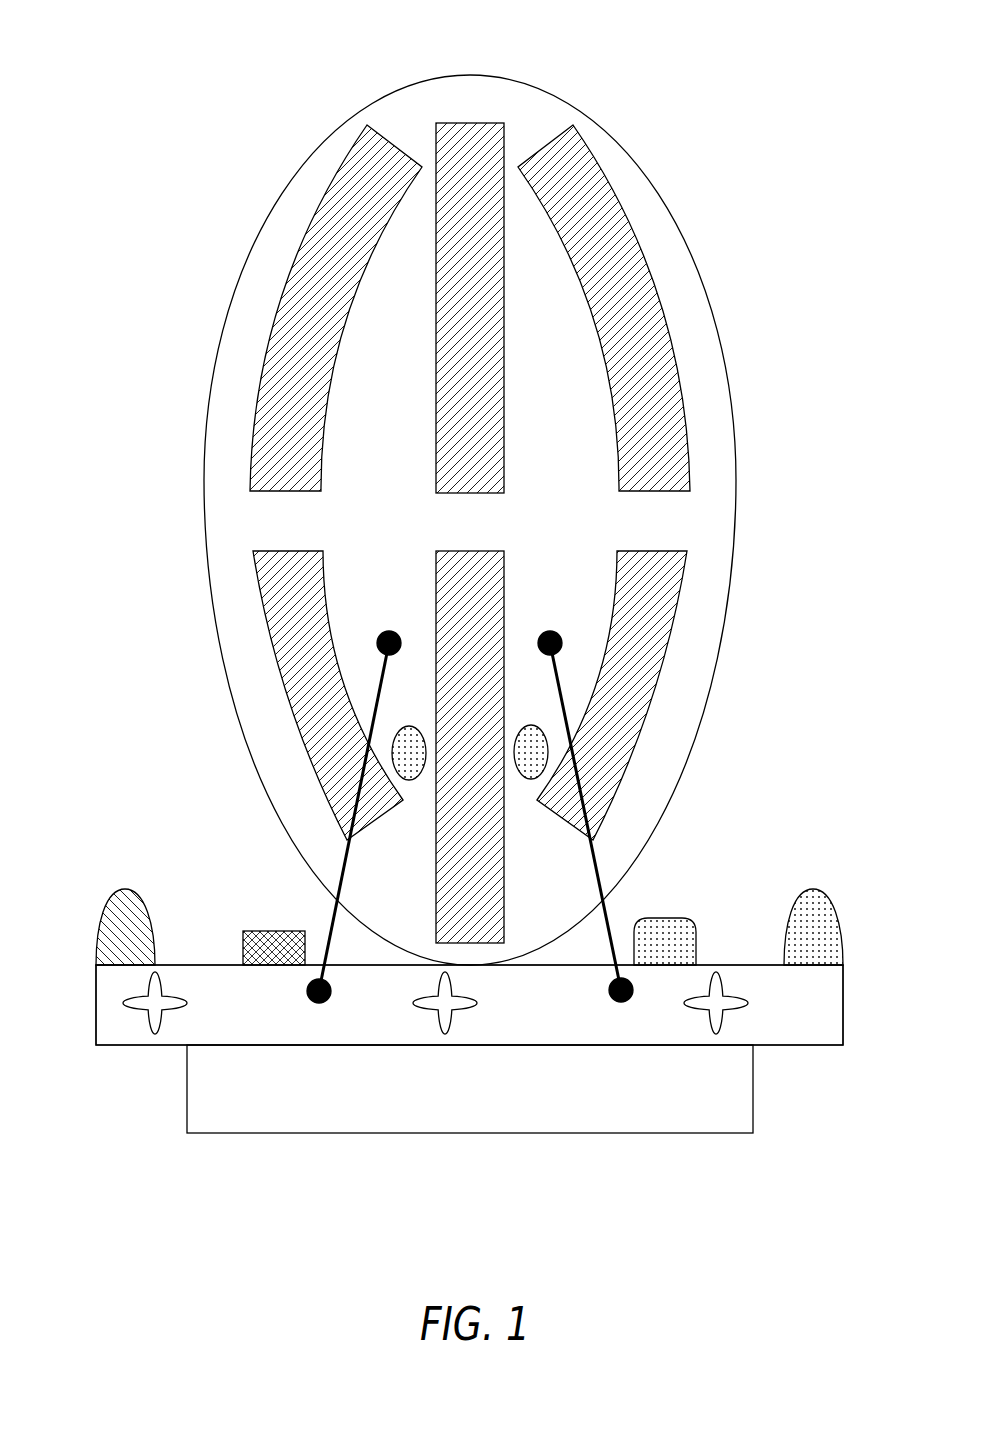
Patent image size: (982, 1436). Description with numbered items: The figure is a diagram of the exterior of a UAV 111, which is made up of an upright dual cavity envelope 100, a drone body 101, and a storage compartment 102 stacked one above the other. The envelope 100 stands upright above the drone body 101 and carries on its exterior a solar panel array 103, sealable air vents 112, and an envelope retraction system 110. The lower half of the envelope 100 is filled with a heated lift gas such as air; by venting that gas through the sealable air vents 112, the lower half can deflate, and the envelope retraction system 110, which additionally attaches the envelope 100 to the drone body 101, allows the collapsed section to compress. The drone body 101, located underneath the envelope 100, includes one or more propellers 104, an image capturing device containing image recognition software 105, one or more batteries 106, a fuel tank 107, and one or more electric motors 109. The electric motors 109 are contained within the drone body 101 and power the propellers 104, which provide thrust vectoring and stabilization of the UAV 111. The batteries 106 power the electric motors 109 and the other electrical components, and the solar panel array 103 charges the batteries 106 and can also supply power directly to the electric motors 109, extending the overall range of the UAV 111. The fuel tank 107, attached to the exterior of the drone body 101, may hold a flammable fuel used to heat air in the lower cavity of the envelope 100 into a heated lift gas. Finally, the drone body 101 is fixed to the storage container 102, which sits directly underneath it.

The upright dual cavity envelope 100 is at (618, 121).
The drone body 101 is at (822, 1042).
The storage compartment 102 is at (730, 1134).
The solar panels 103 is at (305, 206).
The propellers 104 is at (158, 1038).
The image capturing device containing image recognition software 105 is at (120, 893).
The batteries 106 is at (258, 932).
The fuel tank 107 is at (683, 920).
The electric motors 109 is at (648, 1036).
The envelope retraction system 110 is at (549, 617).
The UAV 111 is at (84, 114).
The sealable air vents 112 is at (409, 782).